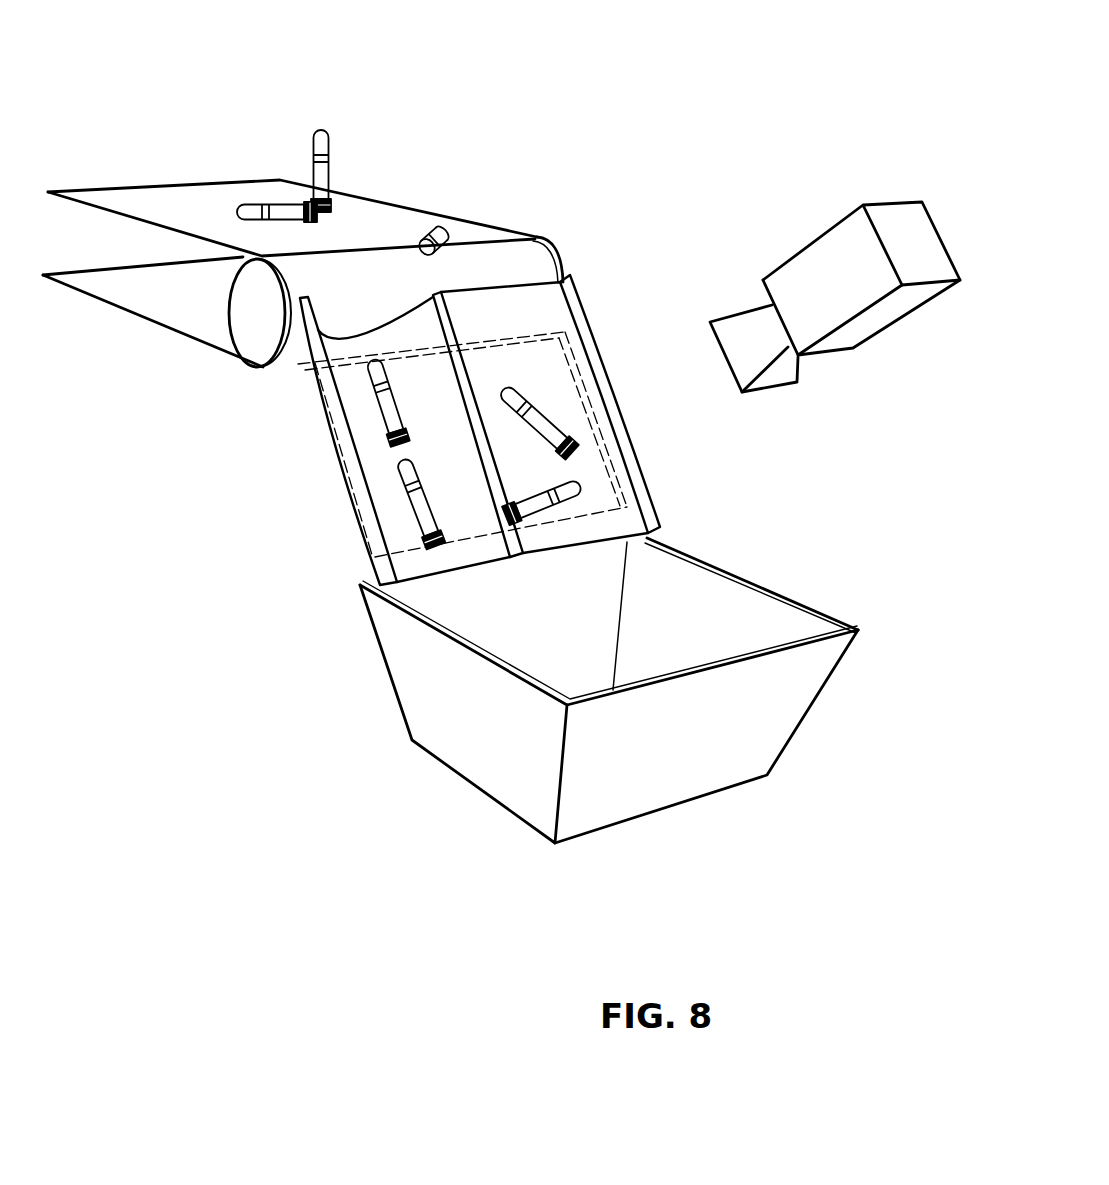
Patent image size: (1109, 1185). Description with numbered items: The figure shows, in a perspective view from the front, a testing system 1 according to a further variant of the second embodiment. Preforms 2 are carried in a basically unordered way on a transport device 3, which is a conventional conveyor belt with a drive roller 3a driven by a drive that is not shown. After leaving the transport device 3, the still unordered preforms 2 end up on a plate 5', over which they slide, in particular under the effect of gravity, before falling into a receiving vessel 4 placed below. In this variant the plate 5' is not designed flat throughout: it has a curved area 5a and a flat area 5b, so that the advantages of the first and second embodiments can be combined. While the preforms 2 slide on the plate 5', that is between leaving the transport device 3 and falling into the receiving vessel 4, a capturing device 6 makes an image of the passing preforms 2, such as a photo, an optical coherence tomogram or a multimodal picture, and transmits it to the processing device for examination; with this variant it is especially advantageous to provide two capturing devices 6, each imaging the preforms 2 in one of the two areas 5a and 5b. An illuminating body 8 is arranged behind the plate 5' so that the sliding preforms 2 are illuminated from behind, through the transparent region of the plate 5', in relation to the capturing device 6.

The testing system 1 is at (676, 112).
The preforms 2 is at (273, 218).
The transport device 3 is at (192, 336).
The drive roller 3a is at (270, 323).
The receiving vessel 4 is at (445, 762).
The plate 5' is at (407, 430).
The curved area 5a is at (467, 567).
The flat area 5b is at (610, 530).
The capturing device 6 is at (798, 257).
The illuminating body 8 is at (338, 451).